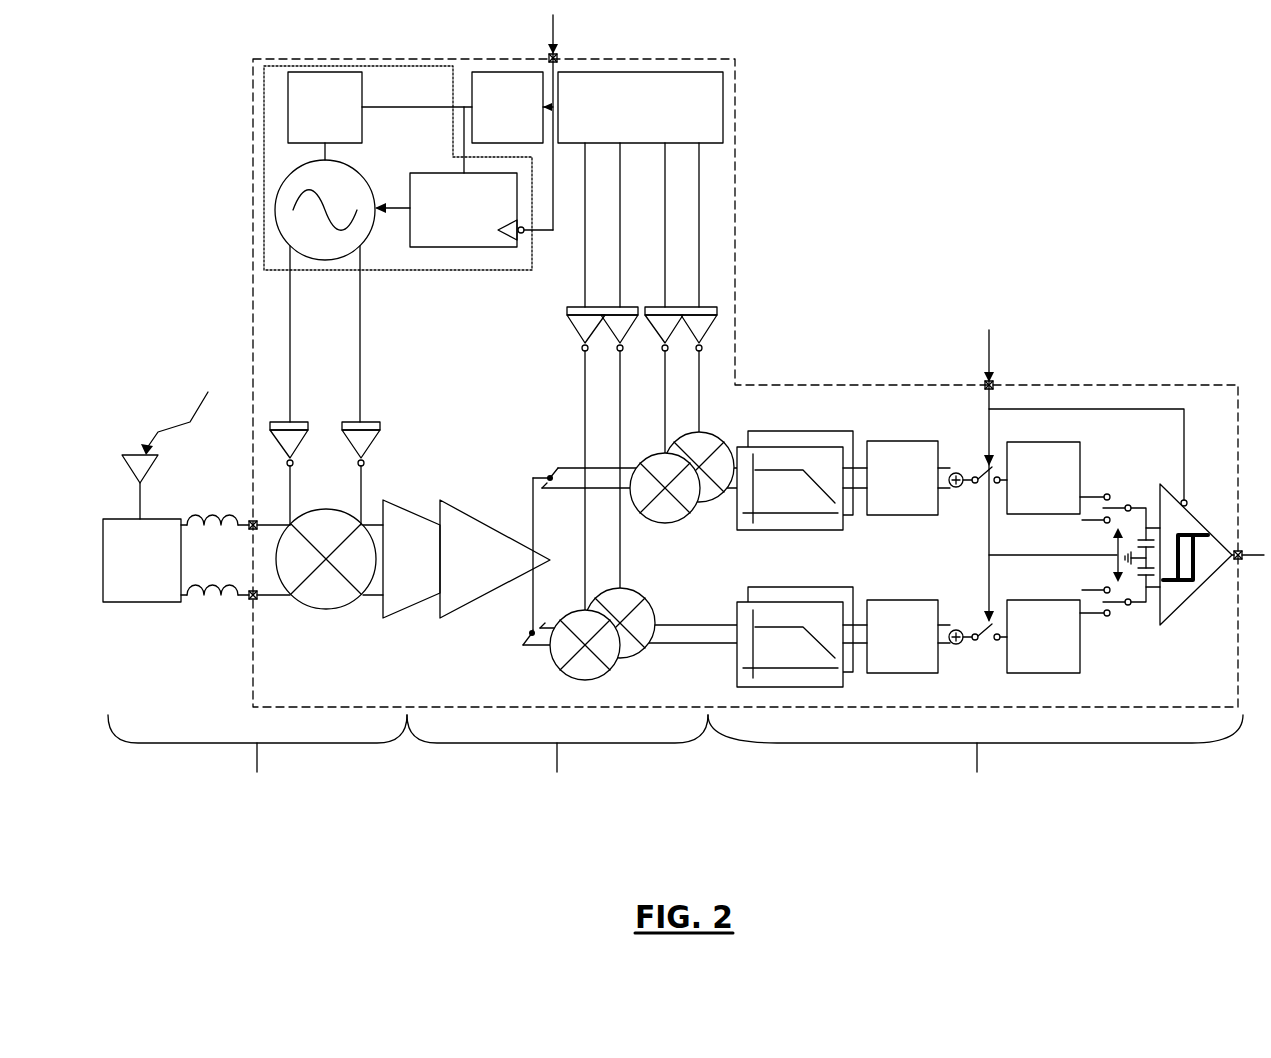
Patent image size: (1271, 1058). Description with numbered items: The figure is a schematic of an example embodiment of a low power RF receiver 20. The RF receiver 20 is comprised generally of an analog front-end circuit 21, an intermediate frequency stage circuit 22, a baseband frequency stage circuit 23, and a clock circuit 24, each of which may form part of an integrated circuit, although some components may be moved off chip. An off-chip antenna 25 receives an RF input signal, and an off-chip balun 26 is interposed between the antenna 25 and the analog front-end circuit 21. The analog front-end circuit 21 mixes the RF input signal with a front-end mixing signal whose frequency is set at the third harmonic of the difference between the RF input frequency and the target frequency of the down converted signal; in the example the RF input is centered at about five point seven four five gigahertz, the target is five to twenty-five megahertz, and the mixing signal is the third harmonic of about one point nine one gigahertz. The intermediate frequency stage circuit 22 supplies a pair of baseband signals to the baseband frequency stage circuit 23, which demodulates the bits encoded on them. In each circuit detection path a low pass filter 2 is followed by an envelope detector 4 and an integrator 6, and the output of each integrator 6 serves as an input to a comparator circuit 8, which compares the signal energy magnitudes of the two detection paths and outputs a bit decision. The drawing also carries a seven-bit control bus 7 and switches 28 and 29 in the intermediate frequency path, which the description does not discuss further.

The low power RF receiver 20 is at (946, 164).
The clock circuit 24 is at (479, 142).
The DAC control bus 7 is at (382, 217).
The antenna 25 is at (130, 455).
The balun 26 is at (108, 603).
The first IF switch 28 is at (545, 450).
The second IF switch 29 is at (508, 643).
The low pass filter 2 is at (770, 431).
The envelope detector 4 is at (890, 441).
The integrator 6 is at (1080, 460).
The comparator circuit 8 is at (1203, 532).
The analog front-end circuit 21 is at (253, 599).
The intermediate frequency stage circuit 22 is at (497, 486).
The baseband frequency stage circuit 23 is at (986, 580).